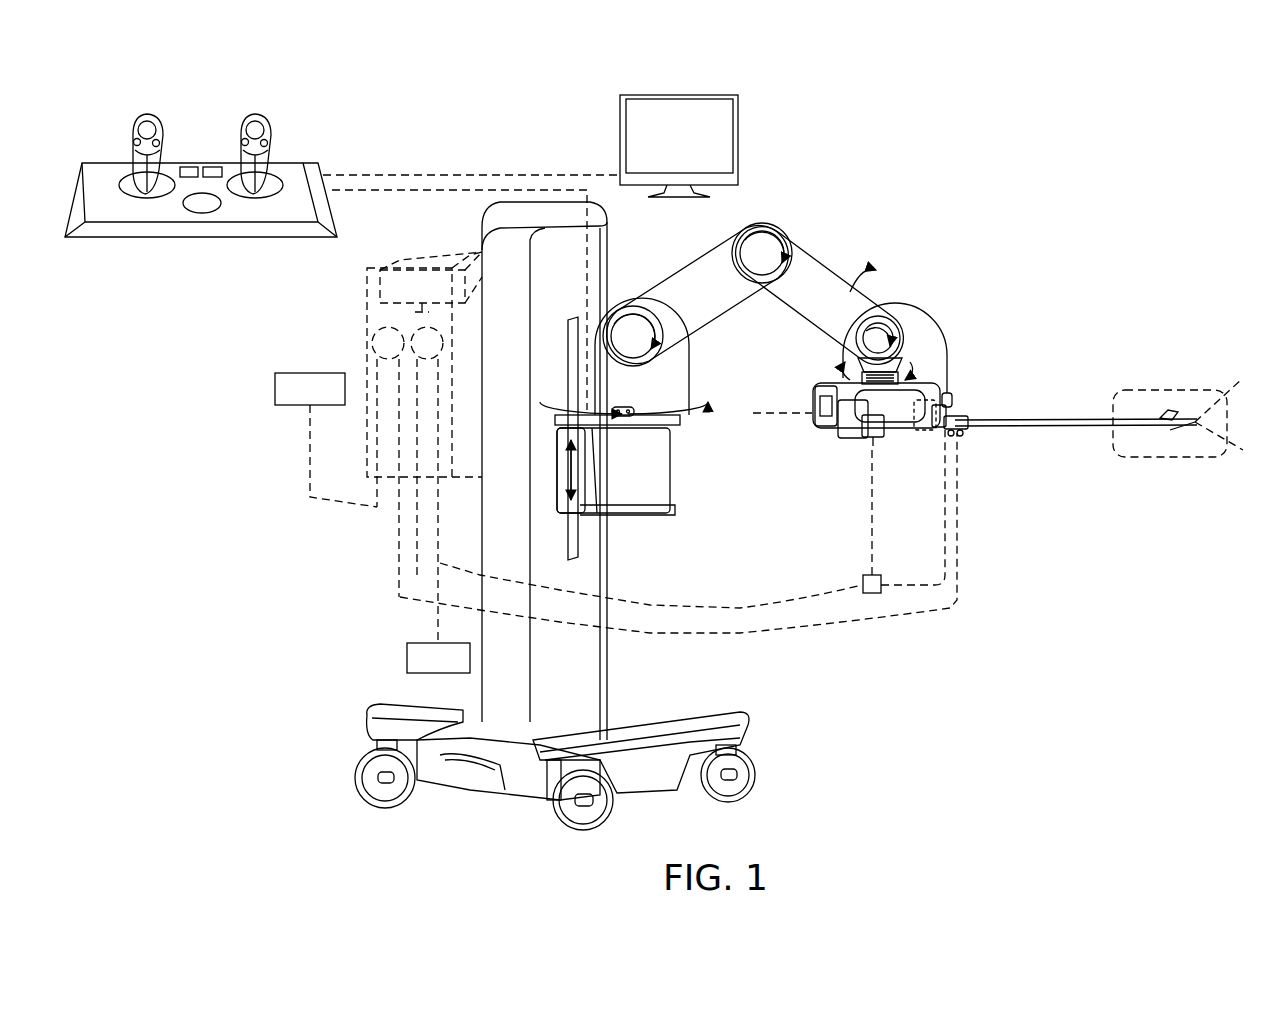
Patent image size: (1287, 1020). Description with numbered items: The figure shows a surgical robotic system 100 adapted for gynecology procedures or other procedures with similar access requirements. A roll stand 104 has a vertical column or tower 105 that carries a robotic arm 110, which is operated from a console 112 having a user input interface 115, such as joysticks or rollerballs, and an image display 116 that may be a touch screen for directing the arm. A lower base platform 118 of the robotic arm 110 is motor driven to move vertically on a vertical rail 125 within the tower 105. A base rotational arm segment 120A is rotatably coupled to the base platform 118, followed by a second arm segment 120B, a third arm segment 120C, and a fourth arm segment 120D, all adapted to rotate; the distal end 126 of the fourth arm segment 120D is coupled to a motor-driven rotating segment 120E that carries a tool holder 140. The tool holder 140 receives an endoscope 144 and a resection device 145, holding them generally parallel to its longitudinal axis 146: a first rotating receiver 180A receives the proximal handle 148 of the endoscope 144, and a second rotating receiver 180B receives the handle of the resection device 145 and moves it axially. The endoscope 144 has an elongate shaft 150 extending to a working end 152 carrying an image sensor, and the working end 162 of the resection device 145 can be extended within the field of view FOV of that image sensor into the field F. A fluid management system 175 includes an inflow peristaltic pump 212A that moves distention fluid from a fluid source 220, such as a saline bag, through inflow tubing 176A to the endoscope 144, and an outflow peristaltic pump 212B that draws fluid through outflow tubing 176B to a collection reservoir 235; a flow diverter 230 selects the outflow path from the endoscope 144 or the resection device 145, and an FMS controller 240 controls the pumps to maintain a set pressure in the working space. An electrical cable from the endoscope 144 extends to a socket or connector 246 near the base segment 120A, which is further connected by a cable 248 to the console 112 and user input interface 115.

The surgical robotic system 100 is at (950, 102).
The roll stand 104 is at (740, 702).
The tower 105 is at (603, 660).
The robotic arm 110 is at (853, 243).
The console 112 is at (298, 164).
The user input interface 115 is at (203, 112).
The image display 116 is at (740, 115).
The base platform 118 is at (672, 482).
The base rotational arm segment 120A is at (680, 398).
The second arm segment 120B is at (665, 290).
The third arm segment 120C is at (823, 243).
The fourth arm segment 120D is at (870, 318).
The rotating segment 120E is at (907, 362).
The vertical rail 125 is at (578, 537).
The distal end 126 is at (905, 337).
The tool holder 140 is at (928, 388).
The endoscope 144 is at (960, 432).
The resection device 145 is at (875, 440).
The longitudinal axis 146 is at (790, 415).
The proximal handle 148 is at (955, 416).
The elongate shaft 150 is at (1040, 418).
The working end 152 is at (1167, 398).
The working end 162 is at (1185, 430).
The fluid management system 175 is at (305, 287).
The inflow tubing 176A is at (397, 528).
The outflow tubing 176B is at (413, 562).
The first rotating receiver 180A is at (925, 435).
The second rotating receiver 180B is at (850, 437).
The inflow peristaltic pump 212A is at (373, 337).
The outflow peristaltic pump 212B is at (410, 328).
The fluid source 220 is at (326, 440).
The flow diverter 230 is at (862, 585).
The collection reservoir 235 is at (438, 658).
The FMS controller 240 is at (395, 272).
The connector 246 is at (660, 432).
The cable 248 is at (432, 193).
The field F is at (1193, 392).
The field of view FOV is at (1230, 458).